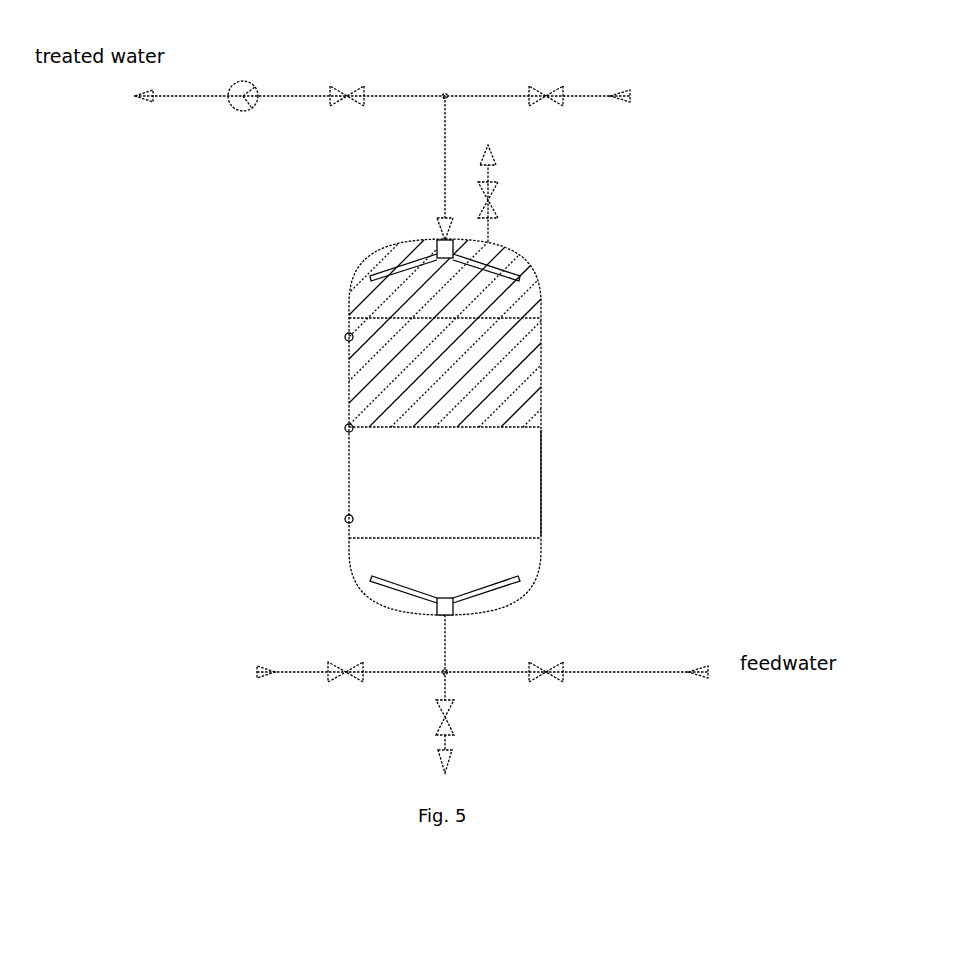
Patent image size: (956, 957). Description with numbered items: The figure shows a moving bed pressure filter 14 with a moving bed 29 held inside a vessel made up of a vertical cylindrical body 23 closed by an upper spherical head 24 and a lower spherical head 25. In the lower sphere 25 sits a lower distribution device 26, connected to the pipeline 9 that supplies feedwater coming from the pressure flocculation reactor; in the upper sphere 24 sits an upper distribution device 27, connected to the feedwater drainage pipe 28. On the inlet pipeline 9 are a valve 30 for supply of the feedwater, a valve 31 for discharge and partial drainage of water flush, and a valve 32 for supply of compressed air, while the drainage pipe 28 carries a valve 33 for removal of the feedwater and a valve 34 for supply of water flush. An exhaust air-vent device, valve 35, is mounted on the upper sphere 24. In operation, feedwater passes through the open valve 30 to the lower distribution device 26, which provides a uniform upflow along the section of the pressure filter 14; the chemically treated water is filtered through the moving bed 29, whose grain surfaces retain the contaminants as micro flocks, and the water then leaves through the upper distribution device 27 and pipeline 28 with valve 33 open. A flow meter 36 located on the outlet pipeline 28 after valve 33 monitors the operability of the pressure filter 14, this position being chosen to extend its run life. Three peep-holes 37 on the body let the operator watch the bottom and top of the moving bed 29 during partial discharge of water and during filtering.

The pipeline 9 is at (445, 660).
The pressure filter 14 is at (526, 496).
The vertical cylindrical body 23 is at (542, 454).
The upper spherical head 24 is at (525, 263).
The lower spherical head 25 is at (489, 612).
The lower distribution device 26 is at (409, 597).
The upper distribution device 27 is at (409, 261).
The feedwater drainage pipe 28 is at (445, 160).
The moving bed 29 is at (521, 369).
The valve for supply of the feedwater 30 is at (541, 677).
The valve for discharge and partial drainage of water flush 31 is at (440, 716).
The valve for supply of compressed air 32 is at (341, 677).
The valve for the removal of feedwater 33 is at (362, 92).
The valve for supply of water flush 34 is at (557, 92).
The exhaust air-vent valve 35 is at (492, 207).
The flow meter 36 is at (251, 86).
The peep-holes 37 is at (347, 515).